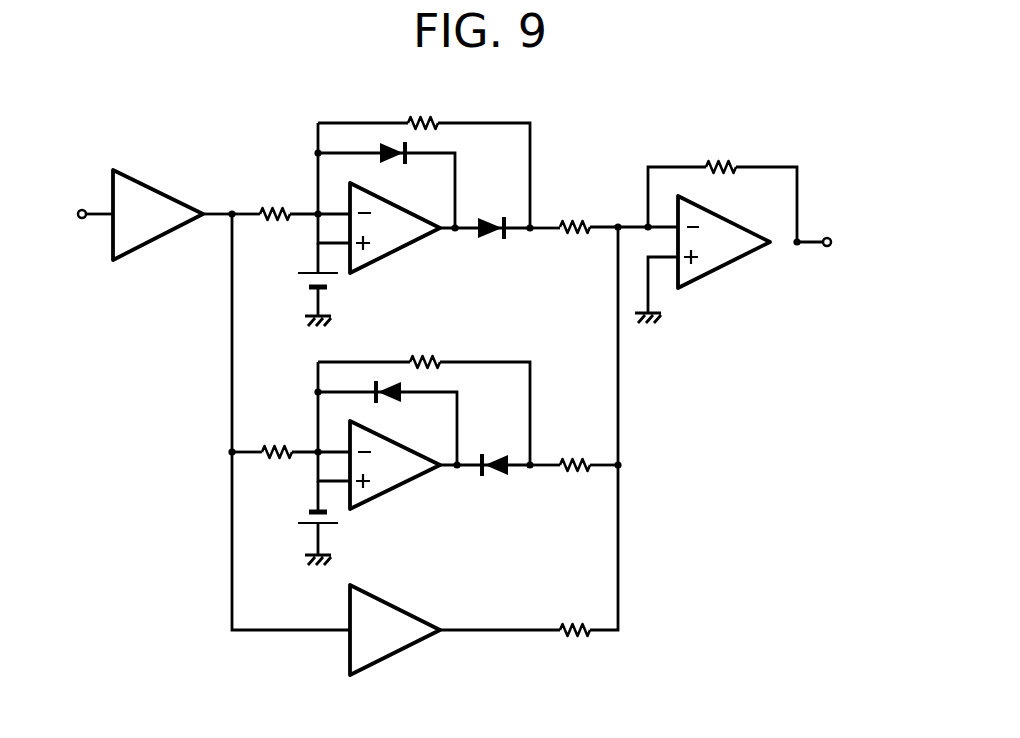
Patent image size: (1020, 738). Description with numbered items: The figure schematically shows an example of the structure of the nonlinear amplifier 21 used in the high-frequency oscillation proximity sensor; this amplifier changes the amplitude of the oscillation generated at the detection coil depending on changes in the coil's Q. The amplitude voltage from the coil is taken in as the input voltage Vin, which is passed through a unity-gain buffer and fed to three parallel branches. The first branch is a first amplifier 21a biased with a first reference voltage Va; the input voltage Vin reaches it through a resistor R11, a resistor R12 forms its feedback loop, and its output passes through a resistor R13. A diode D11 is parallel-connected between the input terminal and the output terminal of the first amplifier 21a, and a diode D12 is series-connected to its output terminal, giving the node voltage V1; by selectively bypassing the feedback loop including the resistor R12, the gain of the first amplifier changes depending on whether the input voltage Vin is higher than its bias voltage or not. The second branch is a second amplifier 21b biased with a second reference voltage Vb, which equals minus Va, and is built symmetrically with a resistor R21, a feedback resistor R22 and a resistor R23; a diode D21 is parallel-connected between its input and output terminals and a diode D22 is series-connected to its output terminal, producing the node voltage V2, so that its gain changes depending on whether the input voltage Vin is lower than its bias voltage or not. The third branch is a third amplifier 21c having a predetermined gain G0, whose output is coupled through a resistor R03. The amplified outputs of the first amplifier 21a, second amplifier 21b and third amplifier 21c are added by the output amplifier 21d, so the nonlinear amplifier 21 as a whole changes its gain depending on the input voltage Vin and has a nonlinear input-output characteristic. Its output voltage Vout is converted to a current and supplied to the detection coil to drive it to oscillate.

The nonlinear amplifier 21 is at (674, 435).
The first amplifier 21a is at (390, 237).
The second amplifier 21b is at (392, 477).
The third amplifier 21c is at (382, 607).
The output amplifier 21d is at (720, 253).
The resistor R11 is at (291, 199).
The resistor R12 is at (424, 158).
The resistor R13 is at (604, 213).
The resistor R21 is at (291, 438).
The resistor R22 is at (424, 398).
The resistor R23 is at (574, 451).
The summing resistor of gain path R03 is at (515, 615).
The diode D11 is at (386, 185).
The diode D12 is at (485, 214).
The diode D21 is at (387, 423).
The diode D22 is at (485, 452).
The first reference voltage Va is at (297, 284).
The second reference voltage Vb is at (297, 523).
The first channel output voltage V1 is at (529, 248).
The second channel output voltage V2 is at (529, 486).
The input voltage Vin is at (147, 215).
The output voltage Vout is at (823, 258).